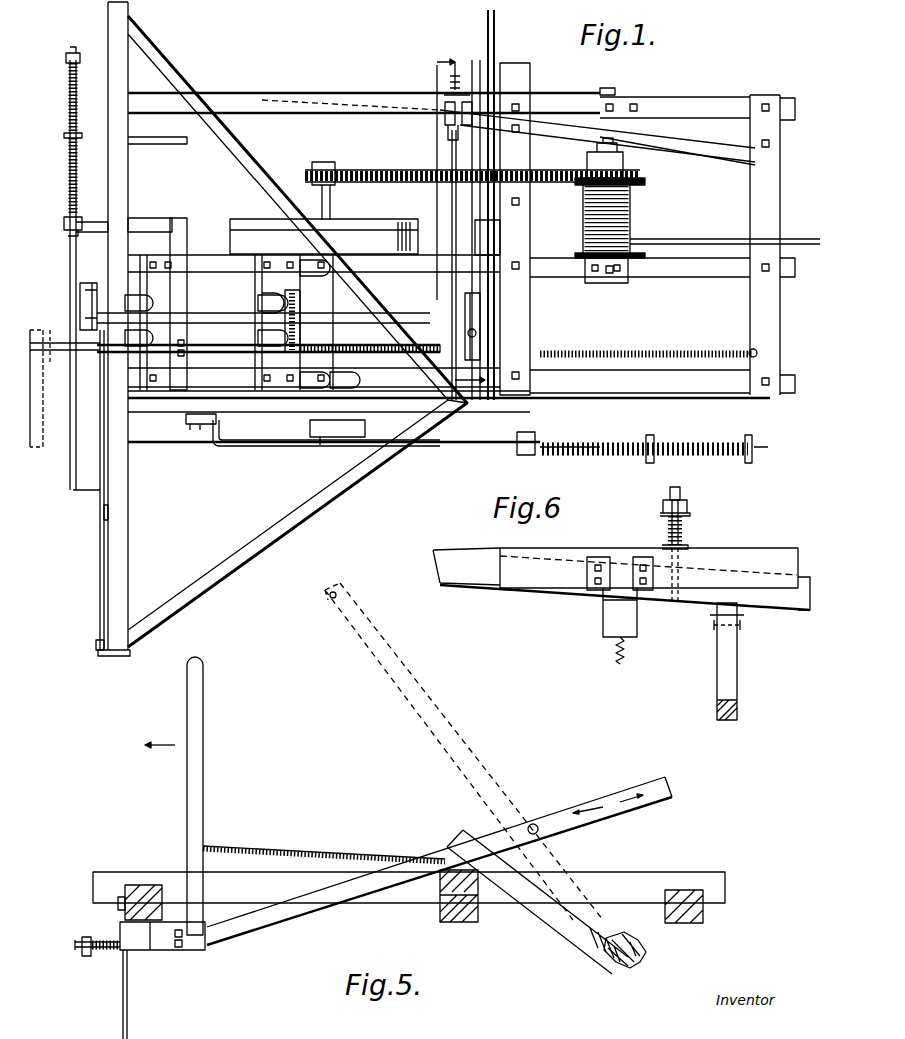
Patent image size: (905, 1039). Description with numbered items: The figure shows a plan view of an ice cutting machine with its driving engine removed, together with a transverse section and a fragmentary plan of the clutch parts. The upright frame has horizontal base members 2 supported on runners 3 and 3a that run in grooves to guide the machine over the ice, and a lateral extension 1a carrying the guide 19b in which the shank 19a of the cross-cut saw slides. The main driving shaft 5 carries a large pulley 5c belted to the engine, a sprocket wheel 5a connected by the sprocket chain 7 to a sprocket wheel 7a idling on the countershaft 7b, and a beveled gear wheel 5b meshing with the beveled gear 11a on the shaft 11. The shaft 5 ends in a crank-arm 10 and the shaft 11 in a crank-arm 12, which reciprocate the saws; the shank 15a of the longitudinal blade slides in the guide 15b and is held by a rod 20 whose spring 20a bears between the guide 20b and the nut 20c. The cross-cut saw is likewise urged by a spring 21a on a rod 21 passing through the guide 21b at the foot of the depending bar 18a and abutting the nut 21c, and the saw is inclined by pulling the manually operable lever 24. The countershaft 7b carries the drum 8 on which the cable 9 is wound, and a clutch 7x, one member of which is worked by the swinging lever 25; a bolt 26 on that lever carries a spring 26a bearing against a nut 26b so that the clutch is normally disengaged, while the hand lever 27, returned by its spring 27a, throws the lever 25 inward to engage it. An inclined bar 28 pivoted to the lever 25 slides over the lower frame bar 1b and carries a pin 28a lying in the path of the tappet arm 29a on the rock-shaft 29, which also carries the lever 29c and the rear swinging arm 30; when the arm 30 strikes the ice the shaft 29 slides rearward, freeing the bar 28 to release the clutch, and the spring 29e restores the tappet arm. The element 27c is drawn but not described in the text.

In FIG. 1, the lateral extension 1a is at (98, 530).
In FIG. 5, the lower frame bar 1b is at (440, 910).
In FIG. 1, the horizontal base member 2 is at (258, 100).
In FIG. 6, the horizontal base member 2 is at (752, 556).
In FIG. 5, the horizontal base member 2 is at (136, 884).
In FIG. 1, the runner 3 is at (722, 395).
In FIG. 1, the runner 3a is at (152, 395).
In FIG. 5, the runner 3a is at (123, 1030).
In FIG. 1, the main driving shaft 5 is at (330, 205).
In FIG. 1, the sprocket wheel 5a is at (318, 162).
In FIG. 1, the beveled gear wheel 5b is at (335, 345).
In FIG. 1, the pulley 5c is at (248, 228).
In FIG. 1, the sprocket chain 7 is at (380, 169).
In FIG. 1, the sprocket wheel 7a is at (648, 176).
In FIG. 1, the countershaft 7b is at (606, 88).
In FIG. 1, the clutch 7x is at (615, 141).
In FIG. 1, the drum 8 is at (640, 195).
In FIG. 1, the cable 9 is at (704, 239).
In FIG. 1, the crank-arm 10 is at (335, 438).
In FIG. 1, the shaft 11 is at (212, 323).
In FIG. 1, the beveled gear 11a is at (265, 300).
In FIG. 1, the crank-arm 12 is at (84, 312).
In FIG. 1, the shank 15a is at (195, 428).
In FIG. 1, the guide 15b is at (262, 440).
In FIG. 1, the rod or bar 18a is at (90, 228).
In FIG. 1, the shank 19a is at (100, 540).
In FIG. 1, the guide 19b is at (98, 580).
In FIG. 1, the rod 20 is at (478, 447).
In FIG. 1, the spring 20a is at (700, 455).
In FIG. 1, the guide 20b is at (528, 455).
In FIG. 1, the collar or nut 20c is at (752, 455).
In FIG. 1, the rod 21 is at (70, 278).
In FIG. 1, the spring 21a is at (68, 105).
In FIG. 1, the guide 21b is at (64, 222).
In FIG. 1, the nut or collar 21c is at (66, 58).
In FIG. 1, the manually operable lever 24 is at (178, 145).
In FIG. 1, the swinging lever 25 is at (718, 140).
In FIG. 6, the swinging lever 25 is at (480, 580).
In FIG. 5, the swinging lever 25 is at (148, 942).
In FIG. 1, the guide rod or bolt 26 is at (462, 71).
In FIG. 6, the guide rod or bolt 26 is at (682, 494).
In FIG. 5, the guide rod or bolt 26 is at (78, 946).
In FIG. 6, the spring 26a is at (684, 534).
In FIG. 5, the spring 26a is at (105, 955).
In FIG. 6, the collar or nut 26b is at (660, 512).
In FIG. 5, the collar or nut 26b is at (85, 937).
In FIG. 1, the hand lever 27 is at (448, 132).
In FIG. 6, the hand lever 27 is at (603, 627).
In FIG. 5, the hand lever 27 is at (203, 746).
In FIG. 6, the spring 27a is at (612, 655).
In FIG. 5, the spring 27a is at (270, 848).
In FIG. 1, the rod 27c is at (452, 158).
In FIG. 1, the inclined rod or bar 28 is at (475, 204).
In FIG. 6, the inclined rod or bar 28 is at (737, 665).
In FIG. 5, the inclined rod or bar 28 is at (650, 806).
In FIG. 1, the pin 28a is at (480, 333).
In FIG. 5, the pin 28a is at (540, 832).
In FIG. 1, the shaft 29 is at (224, 345).
In FIG. 5, the shaft 29 is at (603, 960).
In FIG. 1, the tappet arm 29a is at (152, 226).
In FIG. 5, the tappet arm 29a is at (328, 598).
In FIG. 1, the lever 29c is at (190, 225).
In FIG. 5, the lever 29c is at (385, 663).
In FIG. 1, the spring 29e is at (757, 353).
In FIG. 1, the swinging arm 30 is at (40, 402).